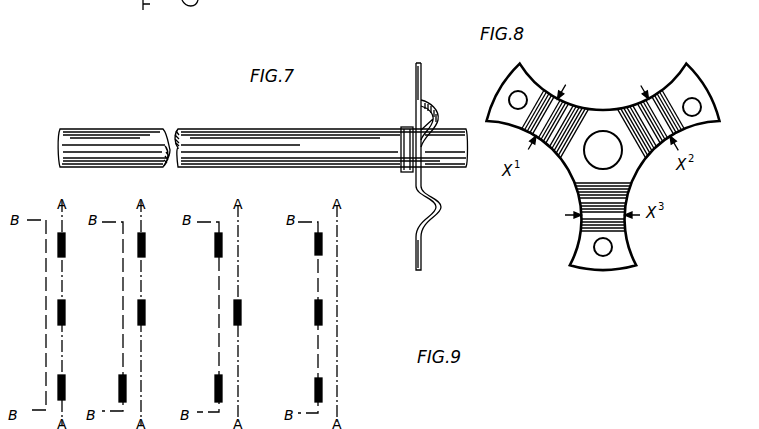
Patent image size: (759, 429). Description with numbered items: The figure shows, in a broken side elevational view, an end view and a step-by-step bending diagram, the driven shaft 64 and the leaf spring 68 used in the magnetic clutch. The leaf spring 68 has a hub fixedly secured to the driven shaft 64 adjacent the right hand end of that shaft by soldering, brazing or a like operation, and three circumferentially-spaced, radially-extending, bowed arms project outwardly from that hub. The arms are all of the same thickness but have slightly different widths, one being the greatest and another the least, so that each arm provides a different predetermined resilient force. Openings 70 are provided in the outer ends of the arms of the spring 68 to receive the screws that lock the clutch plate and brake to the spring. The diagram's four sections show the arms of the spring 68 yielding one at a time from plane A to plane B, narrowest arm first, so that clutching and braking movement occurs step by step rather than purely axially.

In FIG. 7, the driven shaft 64 is at (195, 133).
In FIG. 8, the driven shaft 64 is at (596, 160).
In FIG. 7, the leaf spring 68 is at (440, 212).
In FIG. 8, the leaf spring 68 is at (601, 112).
In FIG. 7, the openings 70 is at (425, 247).
In FIG. 8, the openings 70 is at (512, 97).